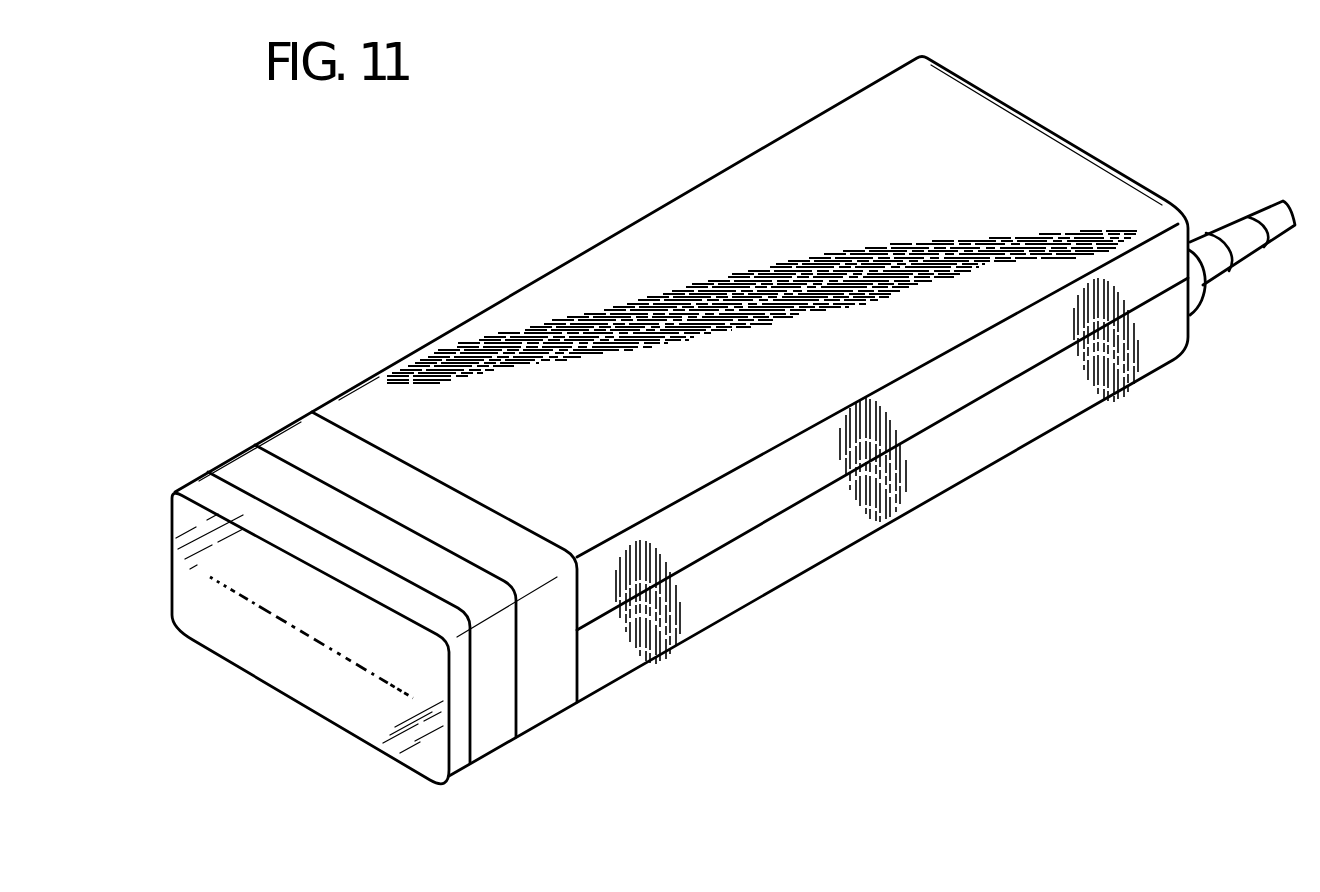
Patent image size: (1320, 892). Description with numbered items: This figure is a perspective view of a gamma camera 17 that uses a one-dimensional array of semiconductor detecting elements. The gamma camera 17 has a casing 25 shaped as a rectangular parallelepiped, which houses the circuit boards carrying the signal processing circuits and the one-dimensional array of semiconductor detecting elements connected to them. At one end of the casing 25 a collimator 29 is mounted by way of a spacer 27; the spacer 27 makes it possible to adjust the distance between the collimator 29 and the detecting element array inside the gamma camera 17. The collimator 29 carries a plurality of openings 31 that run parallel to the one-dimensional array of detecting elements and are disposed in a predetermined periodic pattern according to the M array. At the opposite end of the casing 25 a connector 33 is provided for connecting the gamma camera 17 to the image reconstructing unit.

The gamma camera 17 is at (630, 193).
The casing 25 is at (980, 455).
The spacer 27 is at (493, 737).
The collimator 29 is at (312, 692).
The openings 31 is at (273, 617).
The connector 33 is at (1197, 295).